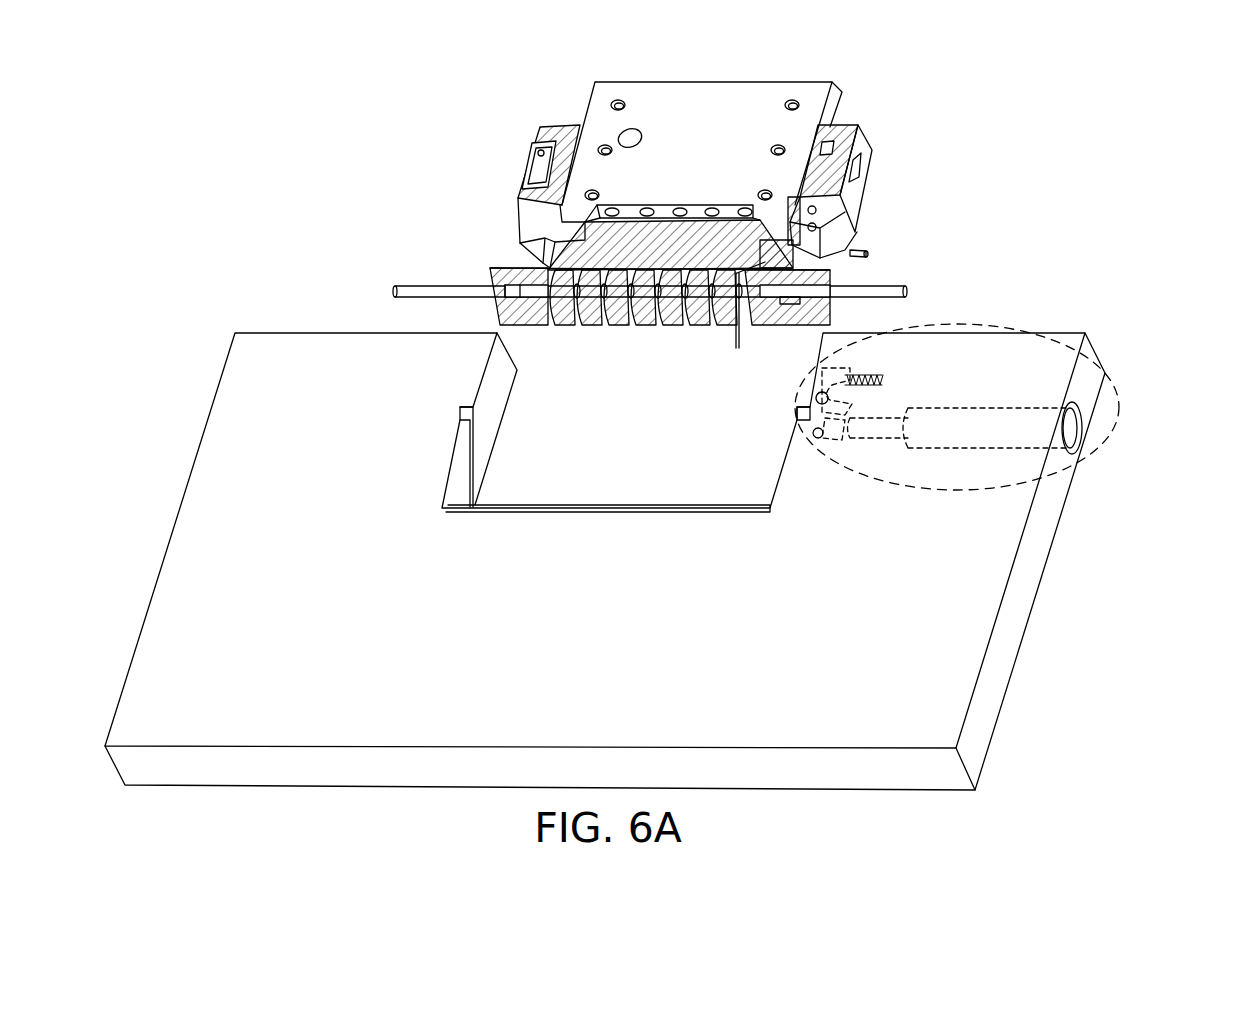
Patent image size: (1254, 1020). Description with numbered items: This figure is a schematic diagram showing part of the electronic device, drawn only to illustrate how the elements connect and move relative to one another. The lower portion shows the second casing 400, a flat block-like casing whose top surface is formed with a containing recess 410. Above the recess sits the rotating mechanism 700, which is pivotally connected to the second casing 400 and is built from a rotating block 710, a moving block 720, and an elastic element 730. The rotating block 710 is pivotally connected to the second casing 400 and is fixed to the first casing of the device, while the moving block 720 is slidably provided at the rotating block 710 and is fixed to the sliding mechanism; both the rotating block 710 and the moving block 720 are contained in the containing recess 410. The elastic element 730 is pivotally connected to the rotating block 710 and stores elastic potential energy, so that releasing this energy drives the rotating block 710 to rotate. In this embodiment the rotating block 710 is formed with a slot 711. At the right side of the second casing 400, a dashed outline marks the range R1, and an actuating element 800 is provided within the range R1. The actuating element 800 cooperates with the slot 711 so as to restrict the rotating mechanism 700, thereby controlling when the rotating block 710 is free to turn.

The second casing 400 is at (1028, 557).
The containing recess 410 is at (565, 502).
The rotating mechanism 700 is at (647, 191).
The rotating block 710 is at (505, 272).
The slot 711 is at (860, 168).
The moving block 720 is at (613, 105).
The elastic element 730 is at (712, 222).
The actuating element 800 is at (1095, 438).
The range R1 is at (1118, 404).